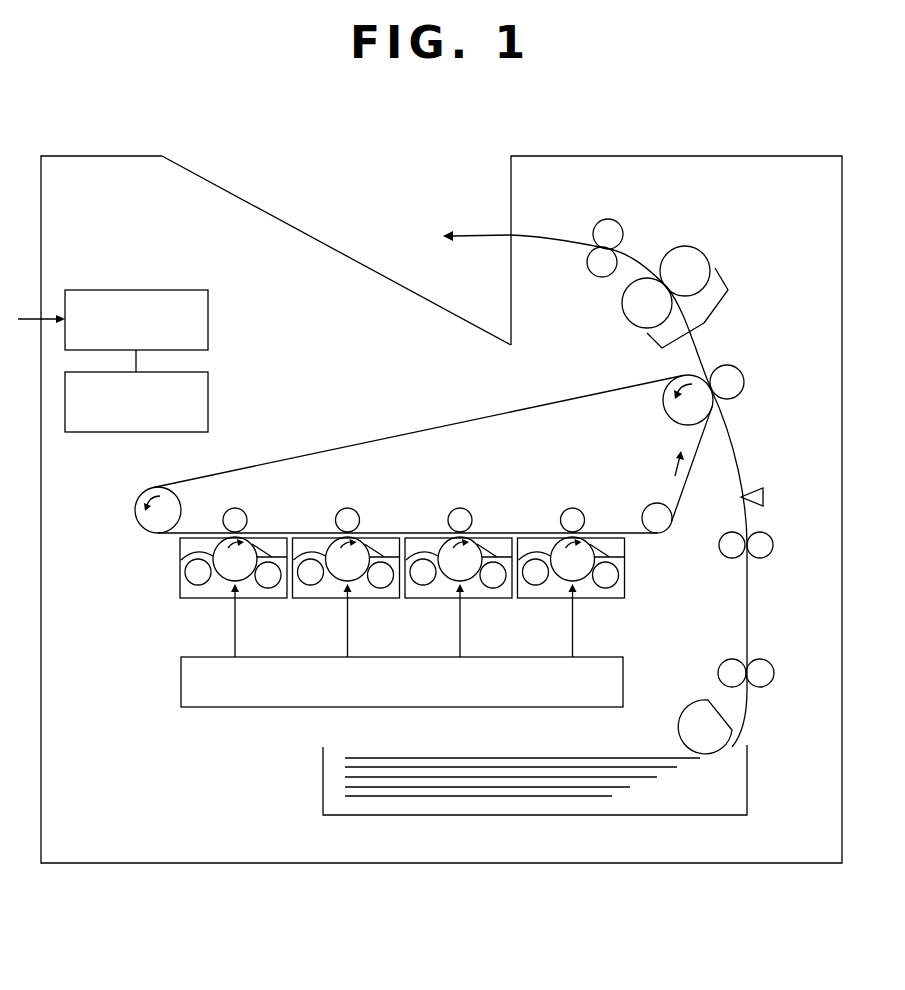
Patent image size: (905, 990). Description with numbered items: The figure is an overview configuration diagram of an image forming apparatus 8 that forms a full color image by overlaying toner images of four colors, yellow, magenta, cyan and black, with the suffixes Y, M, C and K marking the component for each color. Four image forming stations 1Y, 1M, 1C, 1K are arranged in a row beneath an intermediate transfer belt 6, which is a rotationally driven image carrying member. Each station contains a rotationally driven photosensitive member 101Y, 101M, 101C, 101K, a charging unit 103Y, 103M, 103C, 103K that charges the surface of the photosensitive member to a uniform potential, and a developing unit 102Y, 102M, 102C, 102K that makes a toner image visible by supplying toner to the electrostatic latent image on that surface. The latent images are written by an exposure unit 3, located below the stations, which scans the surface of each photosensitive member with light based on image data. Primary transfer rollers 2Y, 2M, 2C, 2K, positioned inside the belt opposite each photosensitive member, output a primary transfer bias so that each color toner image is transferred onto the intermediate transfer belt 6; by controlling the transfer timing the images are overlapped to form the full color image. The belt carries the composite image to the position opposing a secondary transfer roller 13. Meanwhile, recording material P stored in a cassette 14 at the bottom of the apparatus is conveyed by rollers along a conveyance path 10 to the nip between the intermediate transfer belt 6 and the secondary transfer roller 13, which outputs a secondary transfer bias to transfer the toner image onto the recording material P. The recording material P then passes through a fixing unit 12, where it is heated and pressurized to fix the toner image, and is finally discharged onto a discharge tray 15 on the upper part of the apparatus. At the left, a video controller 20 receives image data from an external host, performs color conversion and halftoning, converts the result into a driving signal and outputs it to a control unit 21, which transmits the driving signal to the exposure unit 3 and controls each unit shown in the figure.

The image forming apparatus 8 is at (703, 156).
The discharge tray 15 is at (274, 216).
The video controller 20 is at (208, 318).
The control unit 21 is at (208, 398).
The intermediate transfer belt 6 is at (416, 432).
The fixing unit 12 is at (681, 297).
The secondary transfer roller 13 is at (746, 380).
The conveyance path 10 is at (745, 436).
The exposure unit 3 is at (181, 683).
The cassette 14 is at (323, 780).
The recording material P is at (448, 757).
The image forming station 1Y is at (264, 538).
The image forming station 1M is at (376, 538).
The image forming station 1C is at (488, 538).
The image forming station 1K is at (600, 538).
The primary transfer roller 2Y is at (241, 508).
The primary transfer roller 2M is at (353, 507).
The primary transfer roller 2C is at (465, 507).
The primary transfer roller 2K is at (578, 507).
The photosensitive member 101Y is at (180, 558).
The photosensitive member 101M is at (320, 546).
The photosensitive member 101C is at (432, 546).
The photosensitive member 101K is at (545, 546).
The developing unit 102Y is at (199, 586).
The developing unit 102M is at (311, 586).
The developing unit 102C is at (424, 586).
The developing unit 102K is at (537, 586).
The charging unit 103Y is at (268, 589).
The charging unit 103M is at (380, 589).
The charging unit 103C is at (493, 589).
The charging unit 103K is at (605, 589).